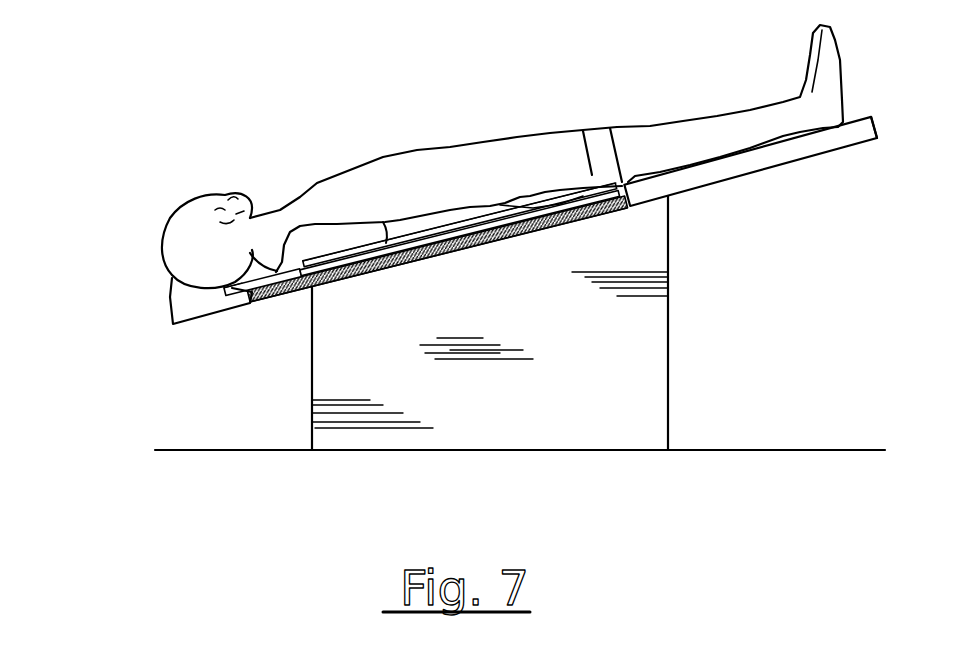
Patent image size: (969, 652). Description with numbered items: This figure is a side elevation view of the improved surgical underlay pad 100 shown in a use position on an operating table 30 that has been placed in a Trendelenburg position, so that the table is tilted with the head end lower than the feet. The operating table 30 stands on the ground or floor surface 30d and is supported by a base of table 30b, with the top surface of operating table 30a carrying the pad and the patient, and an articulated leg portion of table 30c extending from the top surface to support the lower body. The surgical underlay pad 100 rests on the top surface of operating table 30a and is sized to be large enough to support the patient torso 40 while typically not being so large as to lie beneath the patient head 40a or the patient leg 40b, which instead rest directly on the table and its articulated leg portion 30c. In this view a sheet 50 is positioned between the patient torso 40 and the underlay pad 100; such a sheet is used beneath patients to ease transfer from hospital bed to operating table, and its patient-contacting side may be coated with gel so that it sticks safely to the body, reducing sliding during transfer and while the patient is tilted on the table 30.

The operating table 30 is at (248, 397).
The top surface of operating table 30a is at (870, 105).
The base of table 30b is at (668, 373).
The articulated leg portion of table 30c is at (775, 168).
The ground or floor surface 30d is at (803, 447).
The patient torso 40 is at (383, 178).
The patient head 40a is at (172, 235).
The patient leg 40b is at (693, 133).
The sheet 50 is at (268, 279).
The surgical underlay pad 100 is at (455, 270).